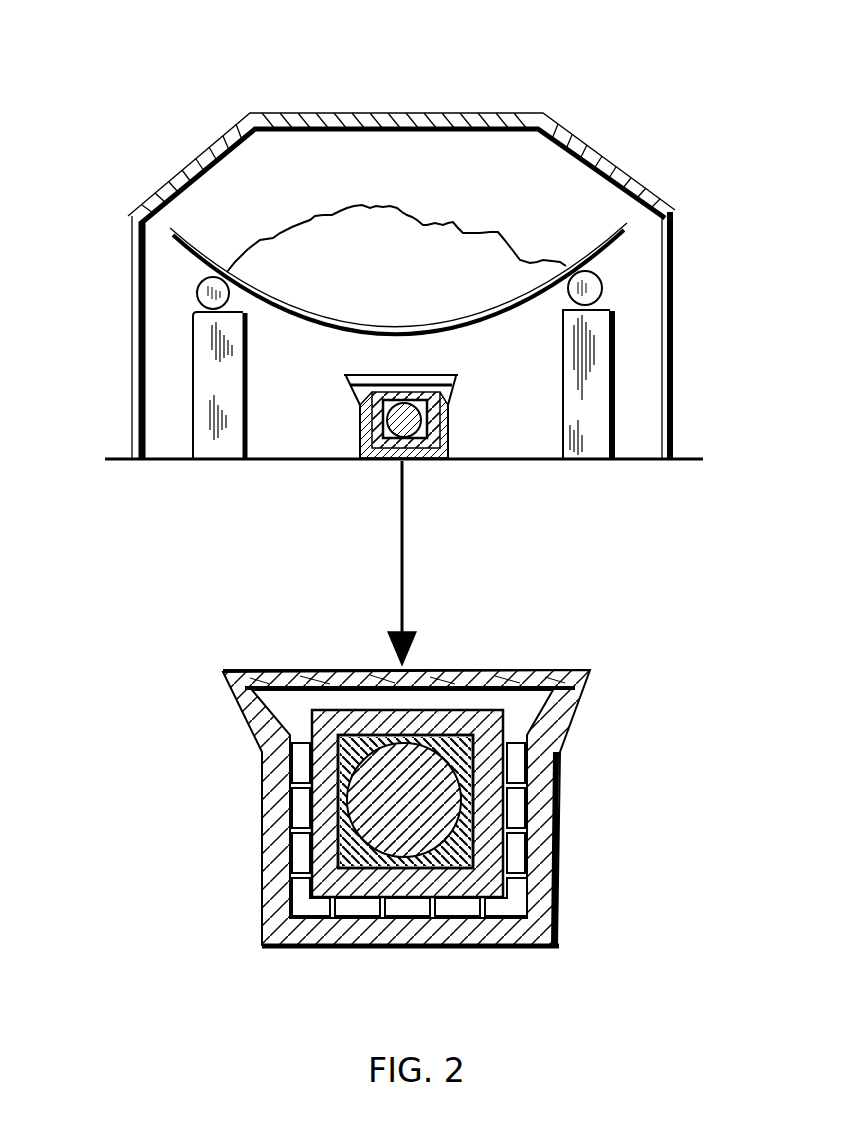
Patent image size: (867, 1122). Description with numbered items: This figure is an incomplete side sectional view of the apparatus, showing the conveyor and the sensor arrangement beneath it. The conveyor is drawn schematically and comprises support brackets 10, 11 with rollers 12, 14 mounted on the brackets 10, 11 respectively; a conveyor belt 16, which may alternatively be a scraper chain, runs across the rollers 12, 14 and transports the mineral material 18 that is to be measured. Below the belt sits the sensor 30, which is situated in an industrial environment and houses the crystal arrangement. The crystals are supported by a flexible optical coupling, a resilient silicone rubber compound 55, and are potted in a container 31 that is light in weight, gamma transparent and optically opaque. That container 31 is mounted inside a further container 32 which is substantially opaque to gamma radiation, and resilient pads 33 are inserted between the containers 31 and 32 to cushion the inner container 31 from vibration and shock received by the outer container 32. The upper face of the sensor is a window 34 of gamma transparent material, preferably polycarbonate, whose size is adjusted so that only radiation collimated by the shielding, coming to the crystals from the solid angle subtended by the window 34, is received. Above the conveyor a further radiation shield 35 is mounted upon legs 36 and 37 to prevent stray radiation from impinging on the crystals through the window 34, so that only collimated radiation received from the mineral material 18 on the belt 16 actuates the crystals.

The support bracket 10 is at (222, 432).
The support bracket 11 is at (590, 432).
The roller 12 is at (199, 292).
The roller 14 is at (599, 293).
The conveyor belt 16 is at (612, 241).
The mineral material 18 is at (460, 258).
The sensor 30 is at (442, 770).
The container 31 is at (470, 870).
The container 32 is at (280, 893).
The resilient pads 33 is at (303, 850).
The window 34 is at (365, 678).
The radiation shield 35 is at (425, 122).
The leg 36 is at (137, 397).
The leg 37 is at (672, 404).
The resilient silicone rubber compound 55 is at (468, 772).